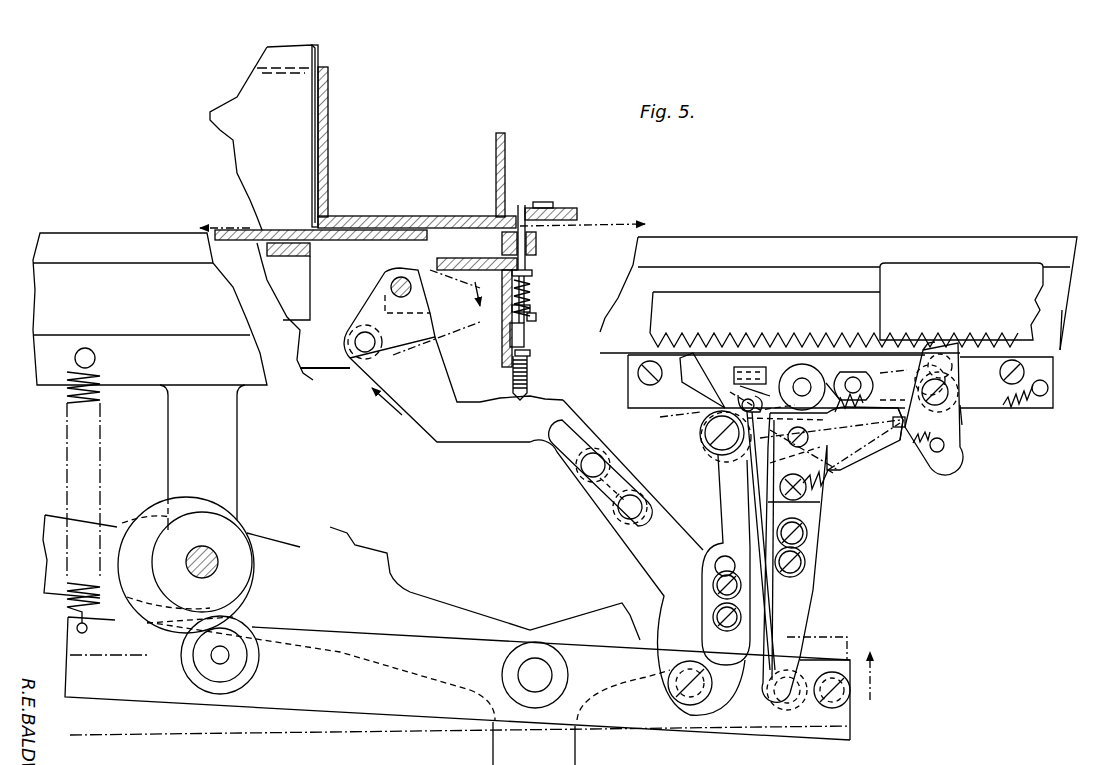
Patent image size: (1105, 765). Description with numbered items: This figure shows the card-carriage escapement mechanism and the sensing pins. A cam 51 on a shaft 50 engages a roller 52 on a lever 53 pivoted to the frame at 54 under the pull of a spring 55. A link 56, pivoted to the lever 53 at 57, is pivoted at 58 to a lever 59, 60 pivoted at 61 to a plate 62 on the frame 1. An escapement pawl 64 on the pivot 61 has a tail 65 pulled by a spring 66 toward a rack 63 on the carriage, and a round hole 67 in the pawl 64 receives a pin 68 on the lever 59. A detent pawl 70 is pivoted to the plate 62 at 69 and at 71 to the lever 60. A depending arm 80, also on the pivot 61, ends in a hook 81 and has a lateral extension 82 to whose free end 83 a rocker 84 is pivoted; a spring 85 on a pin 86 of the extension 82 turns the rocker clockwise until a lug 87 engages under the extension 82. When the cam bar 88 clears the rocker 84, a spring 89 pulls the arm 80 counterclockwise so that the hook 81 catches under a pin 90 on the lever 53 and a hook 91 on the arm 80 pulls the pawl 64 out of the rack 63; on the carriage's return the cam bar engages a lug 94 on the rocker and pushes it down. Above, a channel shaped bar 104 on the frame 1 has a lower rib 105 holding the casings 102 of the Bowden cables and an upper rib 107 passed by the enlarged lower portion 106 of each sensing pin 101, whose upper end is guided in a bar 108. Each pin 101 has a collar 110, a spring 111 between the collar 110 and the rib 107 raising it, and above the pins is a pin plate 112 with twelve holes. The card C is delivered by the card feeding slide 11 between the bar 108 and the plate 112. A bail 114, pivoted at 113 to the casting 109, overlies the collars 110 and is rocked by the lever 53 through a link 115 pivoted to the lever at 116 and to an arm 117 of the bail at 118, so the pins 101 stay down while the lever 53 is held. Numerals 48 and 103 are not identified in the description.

The card C is at (283, 228).
The frame 1 is at (1040, 346).
The card feeding slide 11 is at (321, 253).
The guide plate 48 is at (575, 210).
The shaft 50 is at (212, 556).
The cam 51 is at (150, 512).
The roller 52 is at (248, 665).
The lever 53 is at (653, 727).
The pivot 54 is at (530, 675).
The spring 55 is at (80, 468).
The link 56 is at (735, 509).
The pivot 57 is at (690, 706).
The pivot 58 is at (706, 441).
The lever 59 is at (750, 445).
The lever 60 is at (833, 362).
The pivot 61 is at (804, 372).
The plate 62 is at (983, 397).
The rack 63 is at (713, 325).
The escapement pawl 64 is at (632, 365).
The tail 65 is at (836, 476).
The spring 66 is at (710, 456).
The round hole 67 is at (768, 362).
The pin 68 is at (725, 406).
The pivot 69 is at (956, 352).
The detent pawl 70 is at (865, 376).
The pivot 71 is at (880, 405).
The depending arm 80 is at (812, 562).
The hook 81 is at (808, 725).
The lateral extension 82 is at (906, 419).
The free end 83 is at (950, 380).
The rocker 84 is at (948, 446).
The spring 85 is at (903, 425).
The pin 86 is at (866, 415).
The lug 87 is at (917, 448).
The cam bar 88 is at (948, 272).
The spring 89 is at (962, 417).
The pin 90 is at (850, 697).
The hook 91 is at (748, 365).
The lug 94 is at (943, 355).
The sensing pin 101 is at (527, 264).
The casing 102 is at (528, 380).
The plunger body 103 is at (525, 336).
The channel shaped bar 104 is at (505, 338).
The lower rib 105 is at (531, 353).
The enlarged lower portion 106 is at (531, 308).
The upper rib 107 is at (537, 318).
The bar 108 is at (538, 246).
The casting 109 is at (318, 350).
The collar 110 is at (533, 273).
The spring 111 is at (531, 292).
The pin plate 112 is at (410, 216).
The pivot 113 is at (398, 278).
The bail 114 is at (457, 266).
The link 115 is at (680, 563).
The pivot 116 is at (787, 710).
The arm 117 is at (412, 325).
The pivot 118 is at (364, 350).